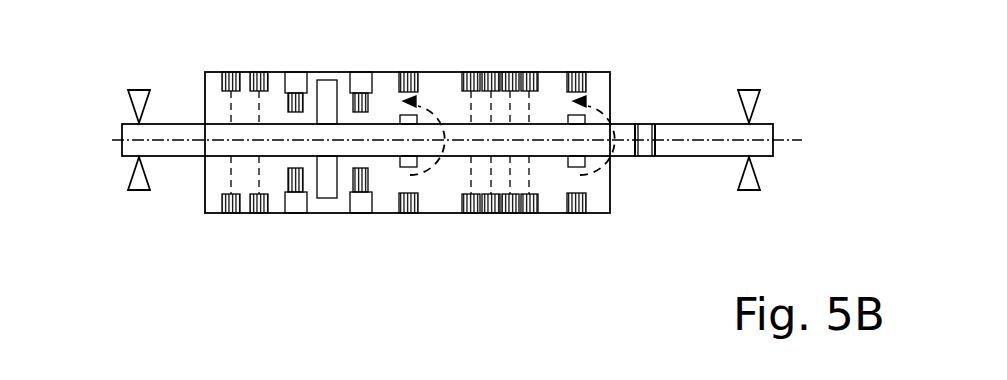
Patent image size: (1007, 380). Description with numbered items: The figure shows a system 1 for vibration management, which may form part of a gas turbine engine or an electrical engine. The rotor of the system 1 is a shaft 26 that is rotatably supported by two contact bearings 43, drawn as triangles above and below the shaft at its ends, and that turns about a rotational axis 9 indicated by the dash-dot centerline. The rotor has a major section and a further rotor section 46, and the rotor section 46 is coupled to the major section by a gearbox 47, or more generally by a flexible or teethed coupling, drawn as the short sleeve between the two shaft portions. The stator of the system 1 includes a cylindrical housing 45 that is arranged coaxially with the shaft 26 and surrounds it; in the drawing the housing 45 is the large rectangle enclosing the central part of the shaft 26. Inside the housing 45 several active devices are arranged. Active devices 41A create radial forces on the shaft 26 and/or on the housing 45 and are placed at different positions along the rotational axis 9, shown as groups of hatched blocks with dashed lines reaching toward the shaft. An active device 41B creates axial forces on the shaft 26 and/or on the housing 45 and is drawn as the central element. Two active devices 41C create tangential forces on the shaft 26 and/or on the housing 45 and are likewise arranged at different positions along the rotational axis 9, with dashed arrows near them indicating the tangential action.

The system for vibration management 1 is at (447, 177).
The rotational axis 9 is at (797, 141).
The shaft 26 is at (180, 148).
The active devices for creating radial forces 41A is at (262, 224).
The active device for creating axial forces 41B is at (326, 224).
The active devices for creating tangential forces 41C is at (408, 224).
The contact bearings 43 is at (116, 104).
The housing 45 is at (205, 72).
The further rotor section 46 is at (698, 140).
The gearbox 47 is at (645, 158).